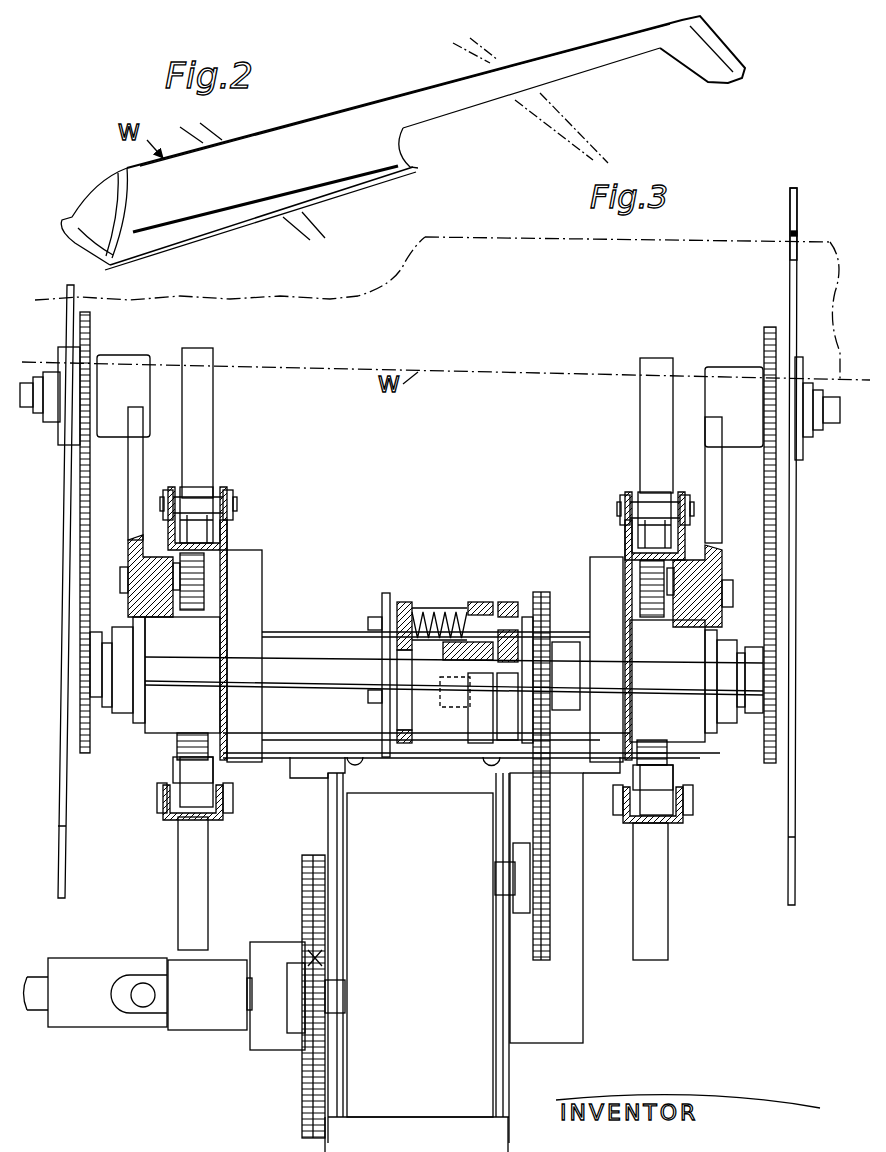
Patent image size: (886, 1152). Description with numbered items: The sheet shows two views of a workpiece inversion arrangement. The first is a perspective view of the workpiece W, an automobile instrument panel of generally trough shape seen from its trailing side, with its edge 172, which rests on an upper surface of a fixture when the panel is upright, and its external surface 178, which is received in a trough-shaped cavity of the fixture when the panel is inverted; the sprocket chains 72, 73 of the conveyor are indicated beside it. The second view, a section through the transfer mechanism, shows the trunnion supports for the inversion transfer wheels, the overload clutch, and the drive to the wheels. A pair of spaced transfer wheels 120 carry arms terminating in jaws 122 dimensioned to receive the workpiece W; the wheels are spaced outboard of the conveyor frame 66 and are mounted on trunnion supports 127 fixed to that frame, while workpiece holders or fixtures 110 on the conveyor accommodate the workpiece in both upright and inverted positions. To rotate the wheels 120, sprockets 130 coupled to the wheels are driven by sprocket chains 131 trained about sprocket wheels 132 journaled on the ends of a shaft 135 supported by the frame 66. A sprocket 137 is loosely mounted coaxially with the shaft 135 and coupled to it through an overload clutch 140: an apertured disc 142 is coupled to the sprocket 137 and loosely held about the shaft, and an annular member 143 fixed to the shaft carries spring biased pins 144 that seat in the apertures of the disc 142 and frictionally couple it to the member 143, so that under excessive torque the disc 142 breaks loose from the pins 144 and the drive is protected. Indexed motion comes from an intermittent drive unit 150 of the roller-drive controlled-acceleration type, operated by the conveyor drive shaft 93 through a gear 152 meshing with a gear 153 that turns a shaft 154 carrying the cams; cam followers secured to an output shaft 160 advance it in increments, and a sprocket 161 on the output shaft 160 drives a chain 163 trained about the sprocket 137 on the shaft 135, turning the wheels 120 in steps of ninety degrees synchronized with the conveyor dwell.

In FIG. 2, the external surface 178 is at (360, 128).
In FIG. 2, the edge 172 is at (385, 178).
In FIG. 2, the sprocket chain 73 is at (316, 218).
In FIG. 3, the sprocket chain 73 is at (205, 527).
In FIG. 2, the sprocket chain 72 is at (550, 112).
In FIG. 3, the sprocket chain 72 is at (655, 537).
In FIG. 3, the jaw 122 is at (796, 242).
In FIG. 3, the sprocket 130 is at (78, 345).
In FIG. 3, the trunnion support 127 is at (122, 364).
In FIG. 3, the workpiece holder 110 is at (210, 405).
In FIG. 3, the sprocket chain 131 is at (90, 512).
In FIG. 3, the transfer wheel 120 is at (66, 525).
In FIG. 3, the conveyor frame 66 is at (228, 562).
In FIG. 3, the shaft 135 is at (184, 662).
In FIG. 3, the sprocket wheel 132 is at (98, 700).
In FIG. 3, the annular member 143 is at (400, 600).
In FIG. 3, the overload clutch 140 is at (480, 597).
In FIG. 3, the spring biased pin 144 is at (474, 606).
In FIG. 3, the apertured disc 142 is at (508, 600).
In FIG. 3, the sprocket 137 is at (526, 616).
In FIG. 3, the chain 163 is at (540, 812).
In FIG. 3, the sprocket 161 is at (528, 865).
In FIG. 3, the output shaft 160 is at (495, 885).
In FIG. 3, the gear 152 is at (304, 900).
In FIG. 3, the gear 153 is at (313, 952).
In FIG. 3, the conveyor drive shaft 93 is at (250, 960).
In FIG. 3, the shaft 154 is at (345, 990).
In FIG. 3, the intermittent drive unit 150 is at (482, 1052).